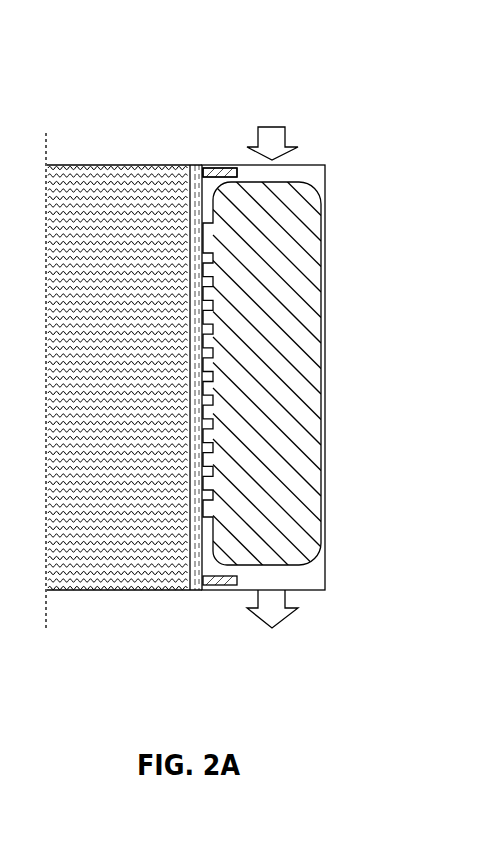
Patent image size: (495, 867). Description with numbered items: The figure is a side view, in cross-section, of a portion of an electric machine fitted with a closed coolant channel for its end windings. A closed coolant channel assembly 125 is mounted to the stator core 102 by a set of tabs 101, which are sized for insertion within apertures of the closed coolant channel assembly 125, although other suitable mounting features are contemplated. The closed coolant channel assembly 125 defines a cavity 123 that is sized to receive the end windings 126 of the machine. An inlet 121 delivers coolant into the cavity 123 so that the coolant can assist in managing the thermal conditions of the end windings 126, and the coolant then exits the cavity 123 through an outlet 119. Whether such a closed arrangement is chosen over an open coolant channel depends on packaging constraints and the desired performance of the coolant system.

The tabs 101 is at (217, 167).
The stator core 102 is at (125, 162).
The outlet 119 is at (303, 590).
The inlet 121 is at (238, 163).
The cavity 123 is at (320, 172).
The closed coolant channel assembly 125 is at (318, 155).
The end windings 126 is at (322, 297).